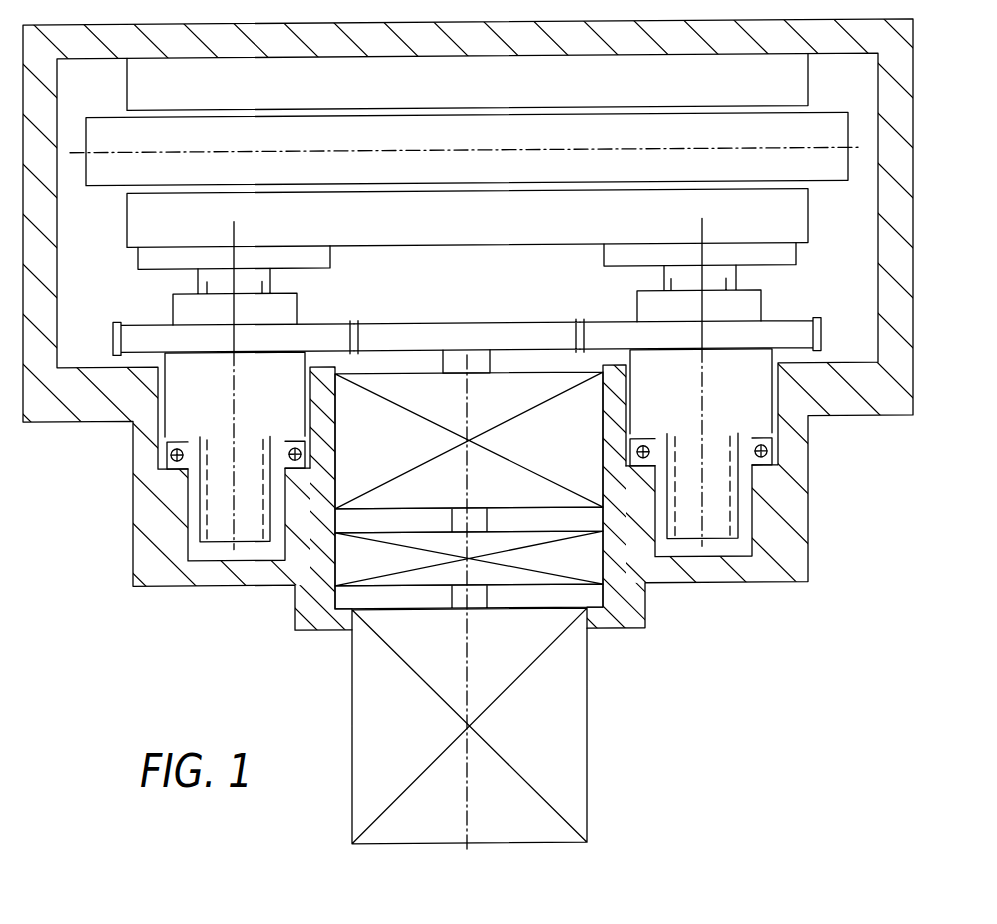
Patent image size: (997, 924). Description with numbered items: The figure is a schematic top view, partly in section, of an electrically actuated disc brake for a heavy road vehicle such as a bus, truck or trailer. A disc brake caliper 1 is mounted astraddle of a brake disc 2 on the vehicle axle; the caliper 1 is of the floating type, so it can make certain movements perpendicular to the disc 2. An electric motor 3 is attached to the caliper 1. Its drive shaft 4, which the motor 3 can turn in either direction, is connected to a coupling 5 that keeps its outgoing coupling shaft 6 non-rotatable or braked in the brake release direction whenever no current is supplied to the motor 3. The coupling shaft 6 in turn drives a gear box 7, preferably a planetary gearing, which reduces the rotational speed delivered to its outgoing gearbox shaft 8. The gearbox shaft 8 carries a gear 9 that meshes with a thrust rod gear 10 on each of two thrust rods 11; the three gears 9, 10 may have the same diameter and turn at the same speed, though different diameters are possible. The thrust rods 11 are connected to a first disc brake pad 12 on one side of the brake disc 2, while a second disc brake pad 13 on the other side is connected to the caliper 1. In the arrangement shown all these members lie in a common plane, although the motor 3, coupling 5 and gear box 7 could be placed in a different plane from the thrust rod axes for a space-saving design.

The disc brake caliper 1 is at (885, 395).
The brake disc 2 is at (823, 173).
The electric motor 3 is at (528, 710).
The drive shaft 4 is at (477, 598).
The coupling 5 is at (583, 555).
The coupling shaft 6 is at (455, 517).
The gear box 7 is at (427, 481).
The gearbox shaft 8 is at (449, 355).
The gear 9 is at (436, 329).
The thrust rod gear 10 is at (313, 332).
The thrust rods 11 is at (187, 411).
The first disc brake pad 12 is at (793, 225).
The second disc brake pad 13 is at (773, 84).